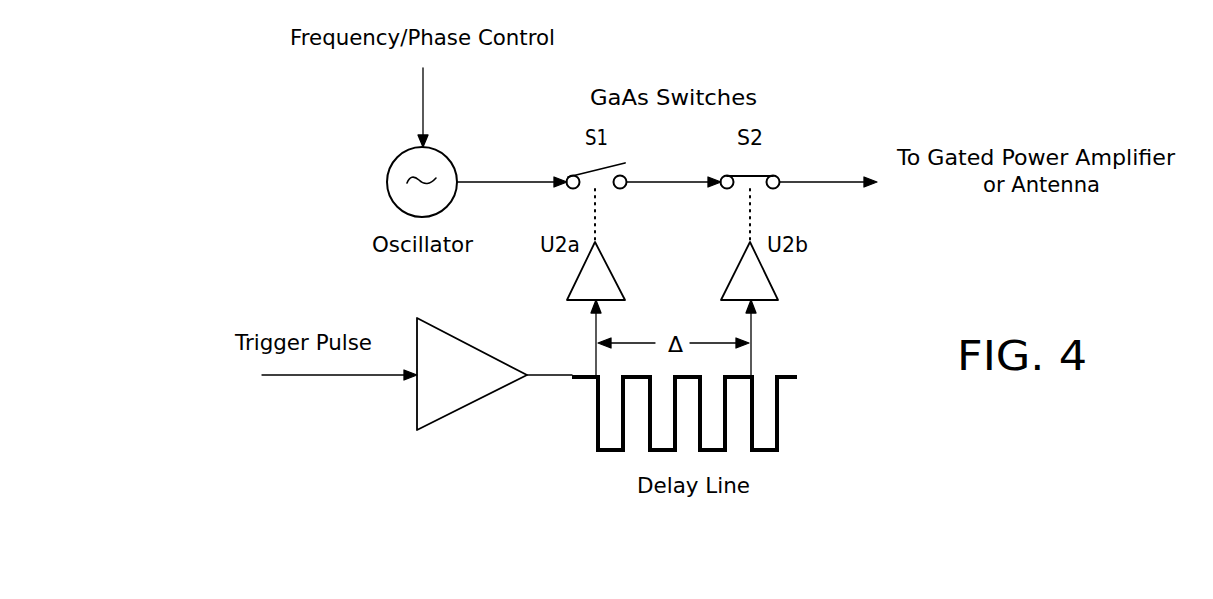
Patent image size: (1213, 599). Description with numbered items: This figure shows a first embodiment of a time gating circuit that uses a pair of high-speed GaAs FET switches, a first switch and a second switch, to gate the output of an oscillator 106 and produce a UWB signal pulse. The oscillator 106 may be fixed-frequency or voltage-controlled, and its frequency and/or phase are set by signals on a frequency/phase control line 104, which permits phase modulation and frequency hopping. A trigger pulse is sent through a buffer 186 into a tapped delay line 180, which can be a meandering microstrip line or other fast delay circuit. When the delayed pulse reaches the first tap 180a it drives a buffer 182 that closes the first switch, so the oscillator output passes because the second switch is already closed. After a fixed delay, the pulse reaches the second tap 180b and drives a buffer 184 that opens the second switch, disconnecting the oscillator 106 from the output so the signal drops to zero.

The frequency/phase control line 104 is at (423, 80).
The oscillator 106 is at (388, 190).
The tapped delay line 180 is at (780, 438).
The first tap 180a is at (596, 348).
The second tap 180b is at (751, 348).
The buffer 182 is at (605, 258).
The buffer 184 is at (738, 269).
The buffer 186 is at (465, 408).